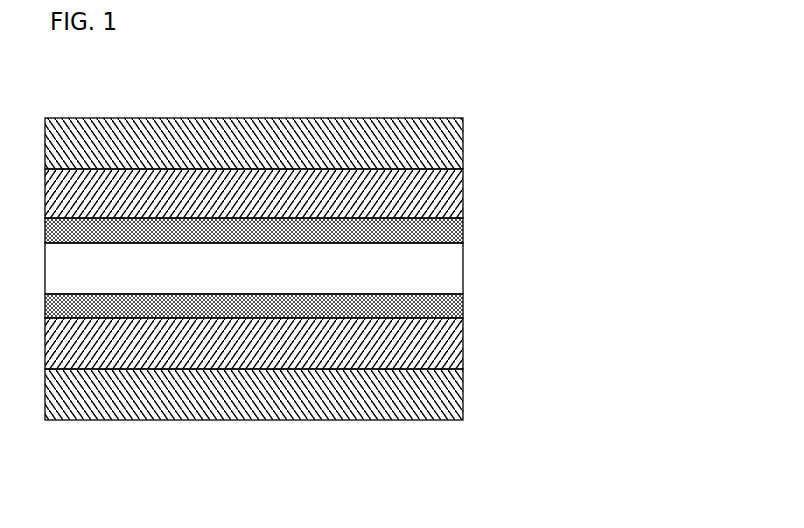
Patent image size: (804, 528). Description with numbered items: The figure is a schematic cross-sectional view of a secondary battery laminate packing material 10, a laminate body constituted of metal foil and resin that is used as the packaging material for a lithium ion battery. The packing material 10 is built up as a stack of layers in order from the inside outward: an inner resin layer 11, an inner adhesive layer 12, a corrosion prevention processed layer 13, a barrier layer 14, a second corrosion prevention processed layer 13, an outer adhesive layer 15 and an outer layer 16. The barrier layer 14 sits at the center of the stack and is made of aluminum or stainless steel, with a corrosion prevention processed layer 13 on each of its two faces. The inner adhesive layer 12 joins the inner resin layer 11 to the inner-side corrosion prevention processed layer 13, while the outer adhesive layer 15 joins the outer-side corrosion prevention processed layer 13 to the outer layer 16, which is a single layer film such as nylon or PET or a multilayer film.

The secondary battery laminate packing material 10 is at (379, 293).
The inner resin layer 11 is at (452, 143).
The inner adhesive layer 12 is at (452, 193).
The corrosion prevention processed layer 13 is at (452, 233).
The barrier layer 14 is at (450, 271).
The outer adhesive layer 15 is at (452, 347).
The outer layer 16 is at (328, 437).